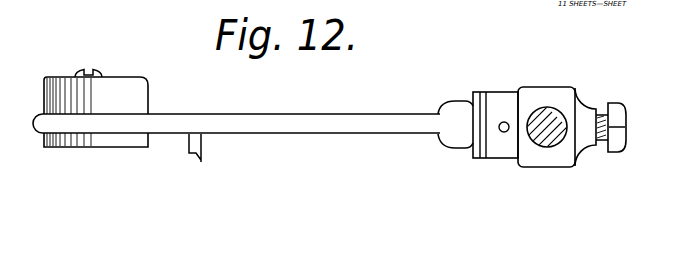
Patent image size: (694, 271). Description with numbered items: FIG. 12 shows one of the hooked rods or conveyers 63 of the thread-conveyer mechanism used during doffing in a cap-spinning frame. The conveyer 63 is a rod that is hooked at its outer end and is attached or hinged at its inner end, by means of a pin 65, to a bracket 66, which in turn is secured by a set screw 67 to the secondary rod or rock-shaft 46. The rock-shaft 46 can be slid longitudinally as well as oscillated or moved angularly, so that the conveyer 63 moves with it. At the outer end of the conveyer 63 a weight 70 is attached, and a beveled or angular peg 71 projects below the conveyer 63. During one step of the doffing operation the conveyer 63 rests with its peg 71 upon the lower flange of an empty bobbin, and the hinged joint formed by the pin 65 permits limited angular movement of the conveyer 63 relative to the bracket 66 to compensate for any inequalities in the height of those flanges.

The secondary rod or rock-shaft 46 is at (543, 110).
The hooked rod or conveyer 63 is at (346, 134).
The pin 65 is at (503, 133).
The bracket 66 is at (547, 155).
The set screw 67 is at (612, 116).
The weight 70 is at (96, 109).
The beveled or angular peg 71 is at (194, 153).